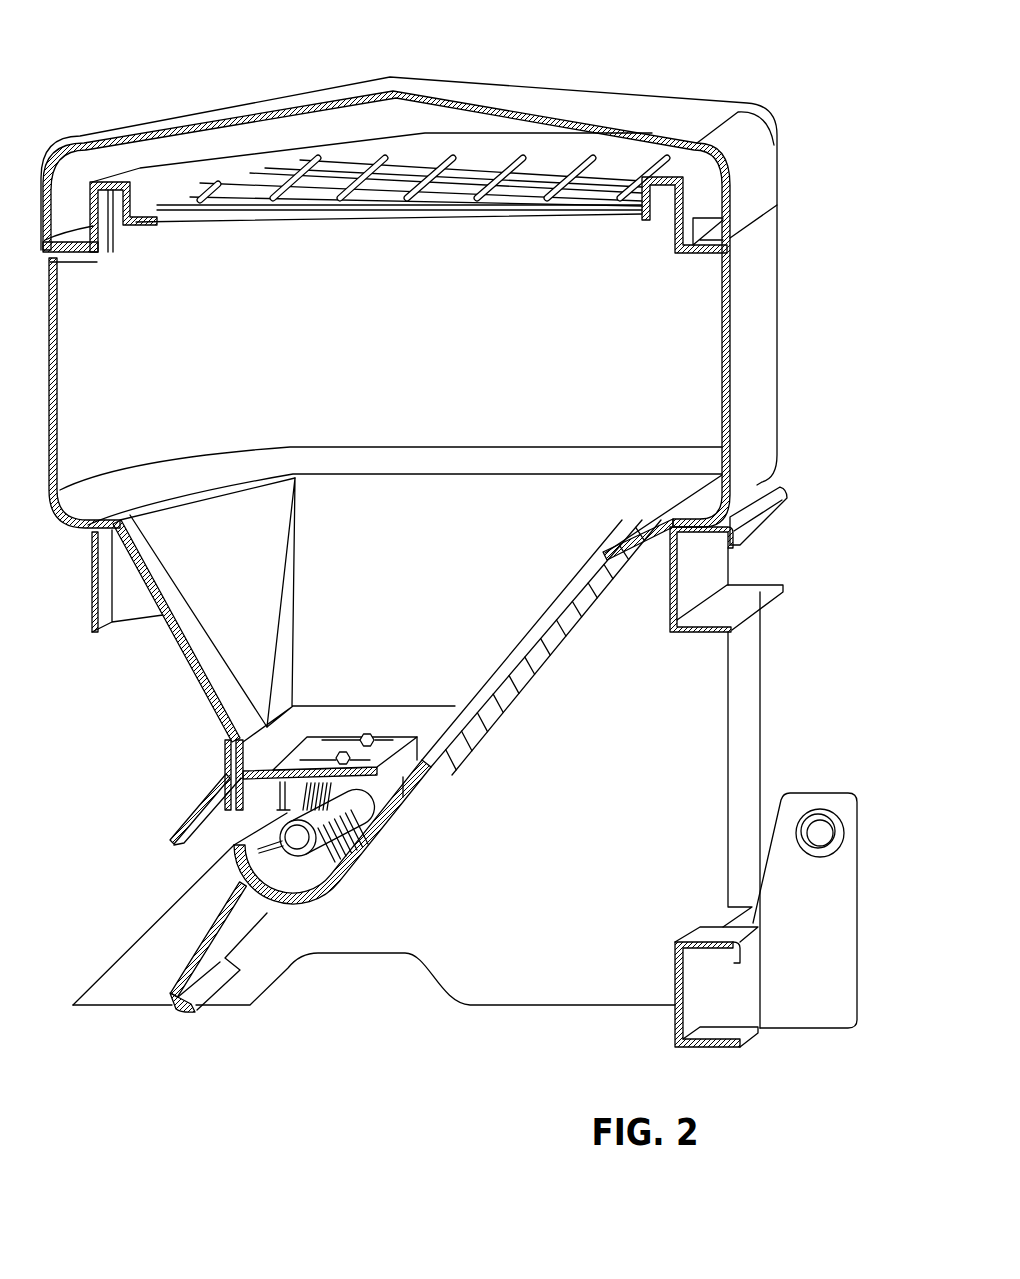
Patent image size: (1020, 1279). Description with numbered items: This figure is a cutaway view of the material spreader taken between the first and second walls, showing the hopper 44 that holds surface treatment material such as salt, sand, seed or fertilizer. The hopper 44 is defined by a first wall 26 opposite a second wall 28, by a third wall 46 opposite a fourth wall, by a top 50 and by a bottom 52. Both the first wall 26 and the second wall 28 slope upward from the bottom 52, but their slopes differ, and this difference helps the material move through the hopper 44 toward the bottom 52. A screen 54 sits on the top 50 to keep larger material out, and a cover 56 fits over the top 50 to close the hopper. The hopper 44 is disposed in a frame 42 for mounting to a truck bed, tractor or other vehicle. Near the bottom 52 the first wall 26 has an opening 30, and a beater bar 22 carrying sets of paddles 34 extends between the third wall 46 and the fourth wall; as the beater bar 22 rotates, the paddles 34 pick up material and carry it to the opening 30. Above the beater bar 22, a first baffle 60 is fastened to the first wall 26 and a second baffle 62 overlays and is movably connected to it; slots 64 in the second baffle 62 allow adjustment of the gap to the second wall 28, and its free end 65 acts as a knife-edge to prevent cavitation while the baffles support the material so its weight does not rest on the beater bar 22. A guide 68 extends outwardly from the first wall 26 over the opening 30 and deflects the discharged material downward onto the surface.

The beater bar 22 is at (301, 858).
The first wall 26 is at (163, 623).
The second wall 28 is at (548, 672).
The opening 30 is at (247, 830).
The paddles 34 is at (360, 847).
The frame 42 is at (760, 650).
The hopper 44 is at (678, 340).
The third wall 46 is at (697, 302).
The top 50 is at (114, 182).
The bottom 52 is at (303, 900).
The screen 54 is at (560, 208).
The cover 56 is at (697, 100).
The first baffle 60 is at (257, 767).
The second baffle 62 is at (400, 737).
The slots 64 is at (358, 737).
The free end 65 is at (400, 753).
The guide 68 is at (193, 813).